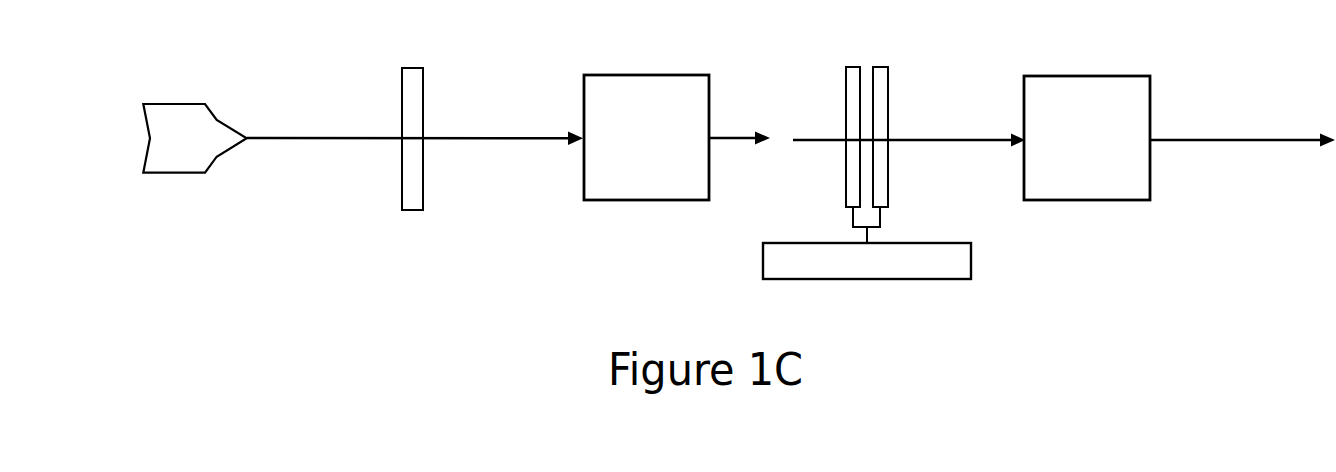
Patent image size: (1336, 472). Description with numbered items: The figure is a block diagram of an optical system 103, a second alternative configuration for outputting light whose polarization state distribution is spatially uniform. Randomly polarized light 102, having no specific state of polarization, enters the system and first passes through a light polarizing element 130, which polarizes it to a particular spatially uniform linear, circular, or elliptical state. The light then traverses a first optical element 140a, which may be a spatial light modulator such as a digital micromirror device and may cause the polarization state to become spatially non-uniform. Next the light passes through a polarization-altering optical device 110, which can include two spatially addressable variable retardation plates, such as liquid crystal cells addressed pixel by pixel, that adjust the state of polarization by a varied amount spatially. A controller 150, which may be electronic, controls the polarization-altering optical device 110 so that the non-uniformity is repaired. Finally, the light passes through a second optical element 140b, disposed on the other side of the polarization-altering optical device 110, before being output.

The light 102 is at (194, 128).
The optical system 103 is at (267, 34).
The polarization-altering optical device (PAD) 110 is at (867, 140).
The light polarizing element 130 is at (412, 121).
The optical element 140a is at (646, 119).
The optical element 140b is at (1087, 115).
The controller 150 is at (867, 261).